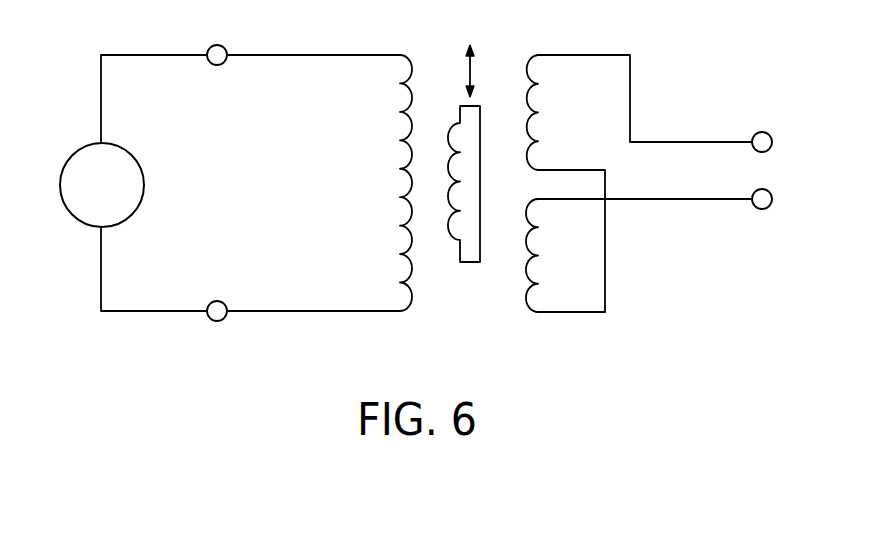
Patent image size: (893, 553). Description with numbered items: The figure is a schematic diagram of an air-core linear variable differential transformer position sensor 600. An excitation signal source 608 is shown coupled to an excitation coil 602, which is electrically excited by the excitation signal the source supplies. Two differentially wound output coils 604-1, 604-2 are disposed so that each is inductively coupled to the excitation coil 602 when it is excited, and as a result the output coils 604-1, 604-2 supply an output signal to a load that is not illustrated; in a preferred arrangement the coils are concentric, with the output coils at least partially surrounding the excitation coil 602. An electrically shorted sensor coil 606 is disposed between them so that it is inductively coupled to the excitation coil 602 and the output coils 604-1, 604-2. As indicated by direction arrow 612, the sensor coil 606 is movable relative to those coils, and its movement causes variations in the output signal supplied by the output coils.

The air-core linear variable differential transformer (LVDT) position sensor 600 is at (673, 83).
The excitation coil 602 is at (400, 55).
The output coil 604-1 is at (538, 55).
The output coil 604-2 is at (536, 313).
The sensor coil 606 is at (470, 262).
The excitation signal source 608 is at (78, 145).
The direction arrow 612 is at (472, 70).